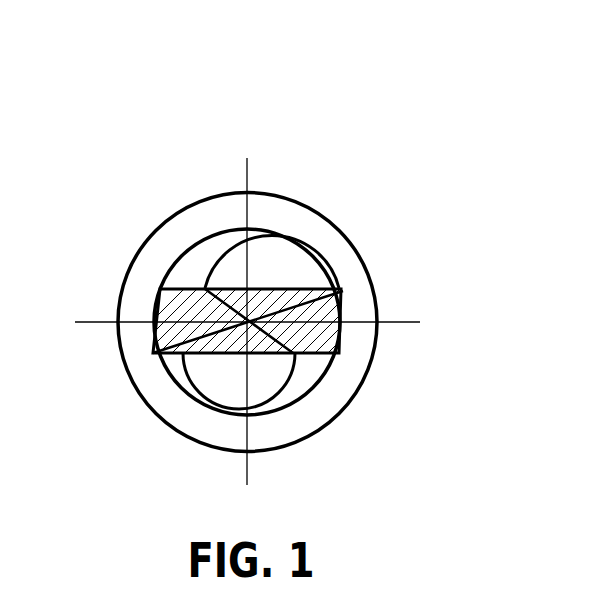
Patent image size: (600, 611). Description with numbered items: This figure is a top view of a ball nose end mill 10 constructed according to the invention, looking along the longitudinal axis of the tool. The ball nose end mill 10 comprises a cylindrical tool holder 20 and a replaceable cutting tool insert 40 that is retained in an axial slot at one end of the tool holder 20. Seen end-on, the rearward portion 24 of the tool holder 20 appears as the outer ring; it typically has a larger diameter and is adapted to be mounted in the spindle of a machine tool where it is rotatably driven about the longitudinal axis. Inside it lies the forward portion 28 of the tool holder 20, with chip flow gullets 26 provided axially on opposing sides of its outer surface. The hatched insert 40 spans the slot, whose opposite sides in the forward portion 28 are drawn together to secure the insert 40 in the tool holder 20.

The ball nose end mill 10 is at (324, 61).
The cylindrical tool holder 20 is at (157, 387).
The rearward portion 24 is at (358, 253).
The chip flow gullets 26 is at (283, 260).
The forward portion 28 is at (190, 262).
The replaceable cutting tool insert 40 is at (326, 335).